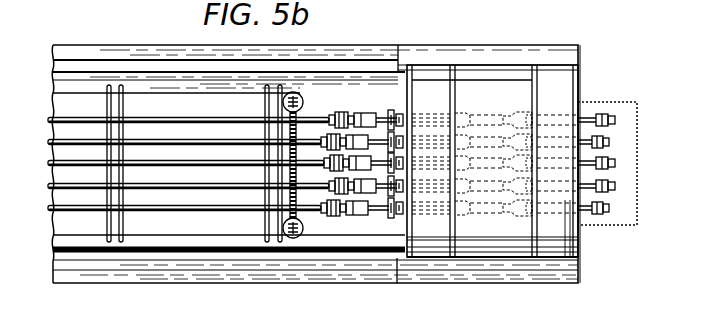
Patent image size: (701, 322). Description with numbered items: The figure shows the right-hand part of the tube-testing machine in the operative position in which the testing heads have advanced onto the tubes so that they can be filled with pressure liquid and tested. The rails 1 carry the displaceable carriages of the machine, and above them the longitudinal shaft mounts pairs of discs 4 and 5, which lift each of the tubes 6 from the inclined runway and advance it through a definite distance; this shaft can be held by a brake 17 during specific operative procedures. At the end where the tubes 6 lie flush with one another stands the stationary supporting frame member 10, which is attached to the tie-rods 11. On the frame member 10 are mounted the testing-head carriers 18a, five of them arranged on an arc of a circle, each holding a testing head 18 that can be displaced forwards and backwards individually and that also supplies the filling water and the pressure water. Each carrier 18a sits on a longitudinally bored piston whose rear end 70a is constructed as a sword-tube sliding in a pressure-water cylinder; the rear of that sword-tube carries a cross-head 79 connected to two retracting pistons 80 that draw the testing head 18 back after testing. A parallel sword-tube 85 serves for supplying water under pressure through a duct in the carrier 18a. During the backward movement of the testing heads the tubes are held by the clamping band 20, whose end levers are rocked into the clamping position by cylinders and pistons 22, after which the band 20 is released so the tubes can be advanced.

The rails 1 is at (53, 75).
The disc 4 is at (107, 224).
The disc 5 is at (123, 224).
The tubes 6 is at (47, 144).
The stationary supporting frame member 10 is at (440, 73).
The tie-rods 11 is at (67, 278).
The brake 17 is at (523, 228).
The testing heads 18 is at (337, 116).
The testing-head carrier 18a is at (372, 112).
The clamping band 20 is at (273, 208).
The cylinders and pistons 22 is at (292, 236).
The rear end of the piston 70a is at (460, 247).
The cross-head 79 is at (607, 160).
The retracting pistons 80 is at (588, 134).
The sword-tube 85 is at (507, 115).